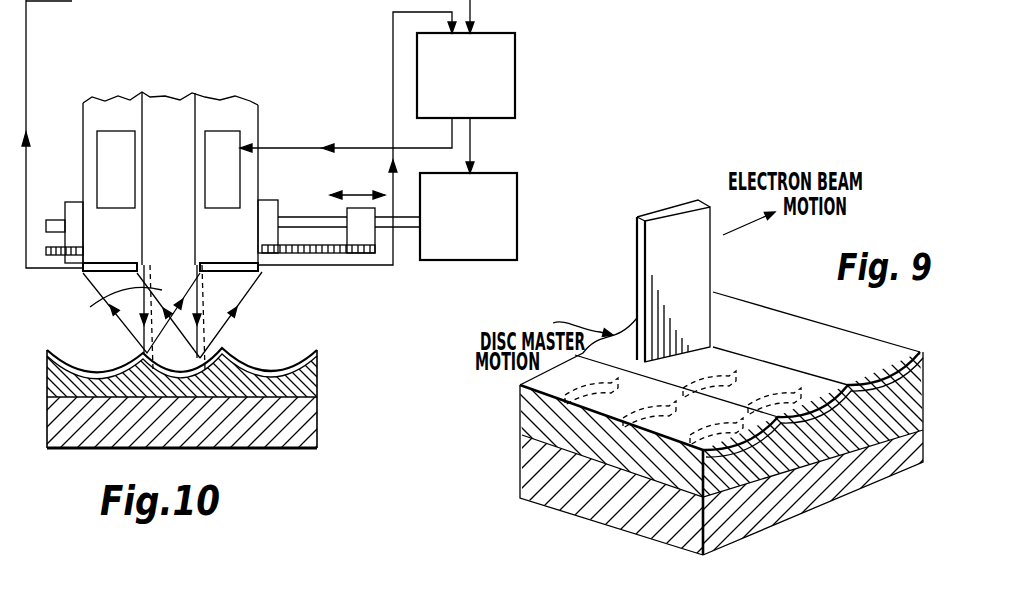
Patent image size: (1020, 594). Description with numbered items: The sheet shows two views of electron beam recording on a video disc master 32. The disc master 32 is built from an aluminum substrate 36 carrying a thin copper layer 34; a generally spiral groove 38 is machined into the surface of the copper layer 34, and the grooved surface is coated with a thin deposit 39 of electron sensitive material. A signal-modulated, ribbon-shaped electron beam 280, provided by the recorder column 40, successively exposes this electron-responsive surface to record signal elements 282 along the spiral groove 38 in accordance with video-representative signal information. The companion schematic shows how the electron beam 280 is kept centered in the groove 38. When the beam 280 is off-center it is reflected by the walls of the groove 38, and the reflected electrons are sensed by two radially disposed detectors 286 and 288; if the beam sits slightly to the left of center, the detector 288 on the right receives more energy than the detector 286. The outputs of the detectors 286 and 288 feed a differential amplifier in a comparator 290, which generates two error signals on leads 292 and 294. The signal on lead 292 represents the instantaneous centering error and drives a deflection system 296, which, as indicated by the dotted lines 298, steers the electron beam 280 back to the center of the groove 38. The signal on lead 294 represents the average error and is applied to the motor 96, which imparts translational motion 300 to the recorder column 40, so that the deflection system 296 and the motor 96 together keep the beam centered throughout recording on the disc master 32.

In FIG. 10, the disc master 32 is at (190, 389).
In FIG. 9, the disc master 32 is at (660, 436).
In FIG. 10, the copper layer 34 is at (318, 368).
In FIG. 9, the copper layer 34 is at (758, 465).
In FIG. 10, the aluminum substrate 36 is at (318, 405).
In FIG. 9, the aluminum substrate 36 is at (815, 495).
In FIG. 10, the spiral groove 38 is at (175, 357).
In FIG. 9, the spiral groove 38 is at (858, 345).
In FIG. 10, the deposit of electron sensitive material 39 is at (320, 355).
In FIG. 9, the deposit of electron sensitive material 39 is at (922, 356).
In FIG. 10, the recorder column 40 is at (188, 166).
In FIG. 10, the motor 96 is at (518, 205).
In FIG. 10, the electron beam 280 is at (137, 317).
In FIG. 9, the electron beam 280 is at (712, 265).
In FIG. 9, the signal elements 282 is at (750, 357).
In FIG. 10, the detector 286 is at (82, 292).
In FIG. 10, the detector 288 is at (258, 280).
In FIG. 10, the comparator 290 is at (517, 44).
In FIG. 10, the lead 292 is at (363, 148).
In FIG. 10, the lead 294 is at (478, 153).
In FIG. 10, the deflection system 296 is at (222, 135).
In FIG. 10, the dotted lines 298 is at (218, 333).
In FIG. 10, the translational motion 300 is at (358, 194).